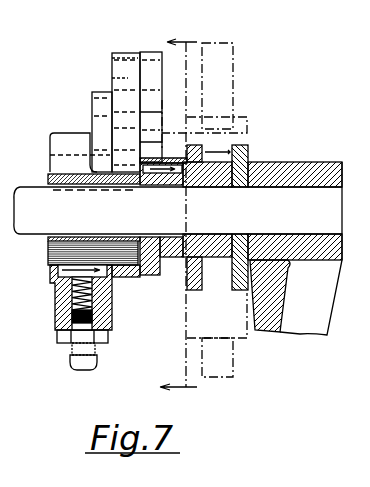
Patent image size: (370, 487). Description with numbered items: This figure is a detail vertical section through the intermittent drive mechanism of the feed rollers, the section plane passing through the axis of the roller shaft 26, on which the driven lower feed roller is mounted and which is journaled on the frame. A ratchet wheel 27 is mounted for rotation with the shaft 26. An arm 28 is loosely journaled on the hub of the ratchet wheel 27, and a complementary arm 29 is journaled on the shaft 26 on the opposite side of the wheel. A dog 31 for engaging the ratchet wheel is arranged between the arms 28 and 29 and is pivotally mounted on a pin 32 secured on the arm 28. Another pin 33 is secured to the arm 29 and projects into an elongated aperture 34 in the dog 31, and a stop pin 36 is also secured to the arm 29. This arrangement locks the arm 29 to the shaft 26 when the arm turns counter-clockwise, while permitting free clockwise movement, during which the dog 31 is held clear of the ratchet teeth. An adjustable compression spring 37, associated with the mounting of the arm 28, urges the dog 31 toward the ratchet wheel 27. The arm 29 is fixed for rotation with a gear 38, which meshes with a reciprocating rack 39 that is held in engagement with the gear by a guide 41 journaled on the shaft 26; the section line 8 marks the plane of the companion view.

The section line 8- 8 is at (178, 217).
The shaft 26 is at (188, 221).
The ratchet wheel 27 is at (128, 278).
The arm 28 is at (92, 97).
The complementary arm 29 is at (152, 50).
The dog 31 is at (126, 52).
The pin 32 is at (163, 150).
The pin 33 is at (112, 78).
The elongated aperture 34 is at (112, 59).
The stop pin 36 is at (112, 122).
The adjustable compression spring 37 is at (72, 303).
The gear 38 is at (222, 150).
The reciprocating rack 39 is at (232, 63).
The guide 41 is at (250, 158).